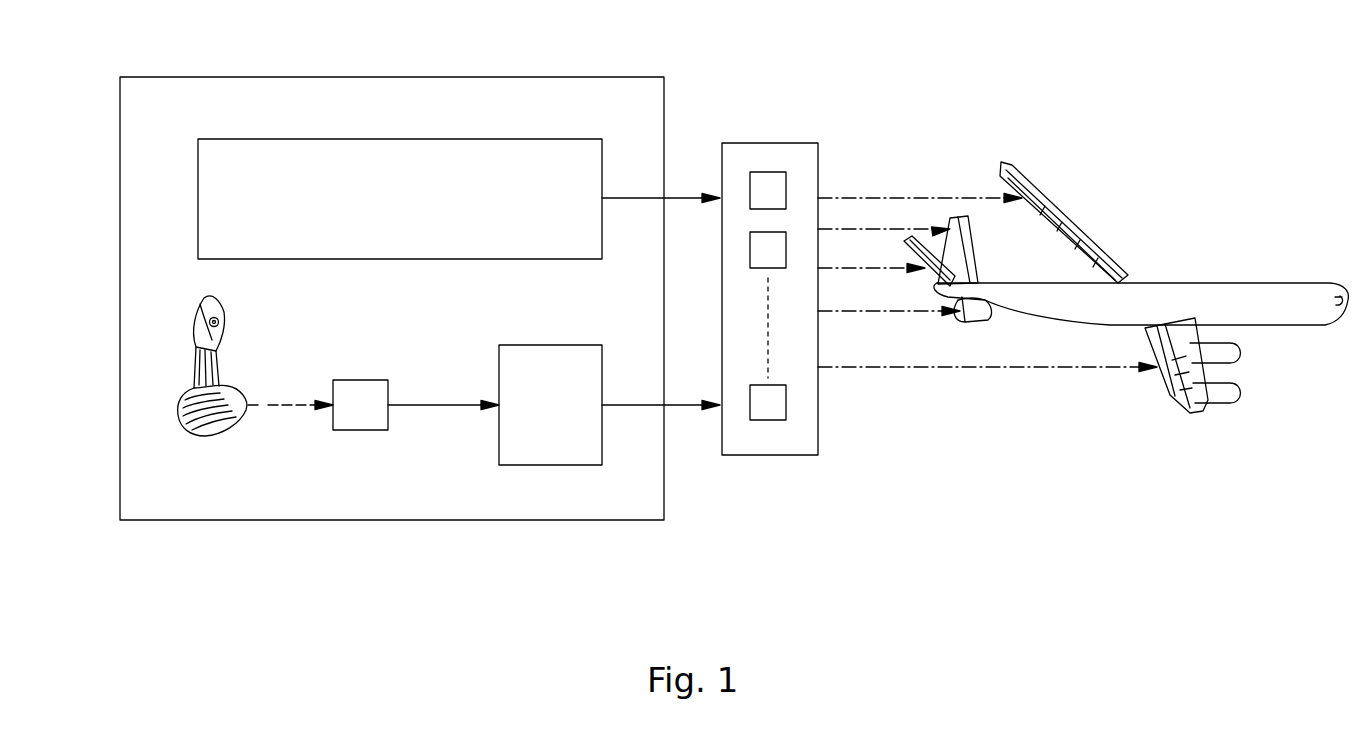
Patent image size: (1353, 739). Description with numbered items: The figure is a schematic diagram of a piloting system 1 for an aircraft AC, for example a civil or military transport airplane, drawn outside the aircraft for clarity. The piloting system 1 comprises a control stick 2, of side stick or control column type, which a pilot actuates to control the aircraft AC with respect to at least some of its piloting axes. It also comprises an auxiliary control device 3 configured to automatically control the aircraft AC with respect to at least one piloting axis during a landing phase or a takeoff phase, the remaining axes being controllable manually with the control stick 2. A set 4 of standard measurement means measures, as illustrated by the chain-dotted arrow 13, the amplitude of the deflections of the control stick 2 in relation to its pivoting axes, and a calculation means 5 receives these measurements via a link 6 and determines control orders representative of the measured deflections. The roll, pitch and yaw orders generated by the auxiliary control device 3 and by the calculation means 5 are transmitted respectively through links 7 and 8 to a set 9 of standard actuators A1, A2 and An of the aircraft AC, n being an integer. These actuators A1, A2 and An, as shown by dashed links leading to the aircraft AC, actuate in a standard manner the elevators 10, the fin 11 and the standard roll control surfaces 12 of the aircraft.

The piloting system 1 is at (390, 521).
The control stick 2 is at (183, 355).
The auxiliary control device 3 is at (421, 260).
The set of measurement means 4 is at (357, 431).
The calculation means 5 is at (540, 467).
The link 6 is at (433, 413).
The link 7 is at (683, 206).
The link 8 is at (685, 413).
The set of actuators 9 is at (766, 457).
The actuator A1 is at (788, 192).
The actuator A2 is at (788, 255).
The actuator An is at (788, 402).
The elevators 10 is at (905, 245).
The fin 11 is at (940, 222).
The roll control surfaces 12 is at (1088, 243).
The chain-dotted arrow 13 is at (266, 412).
The aircraft AC is at (1291, 328).